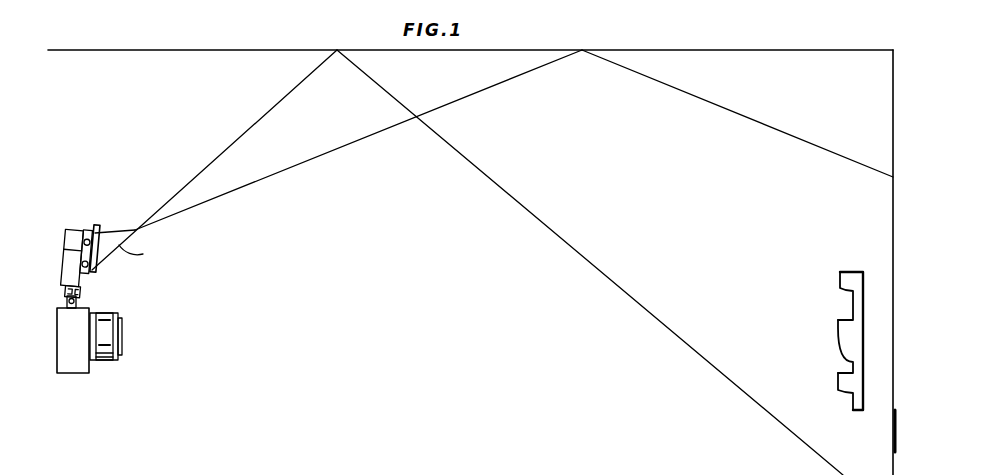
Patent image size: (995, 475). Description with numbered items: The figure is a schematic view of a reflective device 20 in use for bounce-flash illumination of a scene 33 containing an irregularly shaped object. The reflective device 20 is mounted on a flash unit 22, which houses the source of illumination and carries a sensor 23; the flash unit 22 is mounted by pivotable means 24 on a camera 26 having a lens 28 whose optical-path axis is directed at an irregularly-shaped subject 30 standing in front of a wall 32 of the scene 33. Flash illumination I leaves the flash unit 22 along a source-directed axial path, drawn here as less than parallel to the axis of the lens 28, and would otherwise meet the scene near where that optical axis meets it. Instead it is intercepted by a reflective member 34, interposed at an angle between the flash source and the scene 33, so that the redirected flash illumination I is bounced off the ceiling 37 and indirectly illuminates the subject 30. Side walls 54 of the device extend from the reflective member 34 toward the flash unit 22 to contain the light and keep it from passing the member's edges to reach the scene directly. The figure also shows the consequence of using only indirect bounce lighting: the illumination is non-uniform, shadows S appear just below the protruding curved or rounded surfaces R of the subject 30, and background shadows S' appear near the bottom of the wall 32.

The reflective device 20 is at (90, 233).
The flash unit 22 is at (66, 258).
The sensor 23 is at (98, 284).
The pivotable means 24 is at (66, 298).
The camera 26 is at (63, 346).
The lens 28 is at (108, 352).
The subject 30 is at (856, 337).
The wall 32 is at (893, 213).
The scene 33 is at (811, 320).
The reflective member 34 is at (143, 255).
The ceiling 37 is at (243, 51).
The side walls 54 is at (115, 237).
The flash illumination I is at (237, 138).
The shadows S is at (824, 342).
The rounded surfaces R is at (840, 347).
The background shadows S' is at (862, 431).